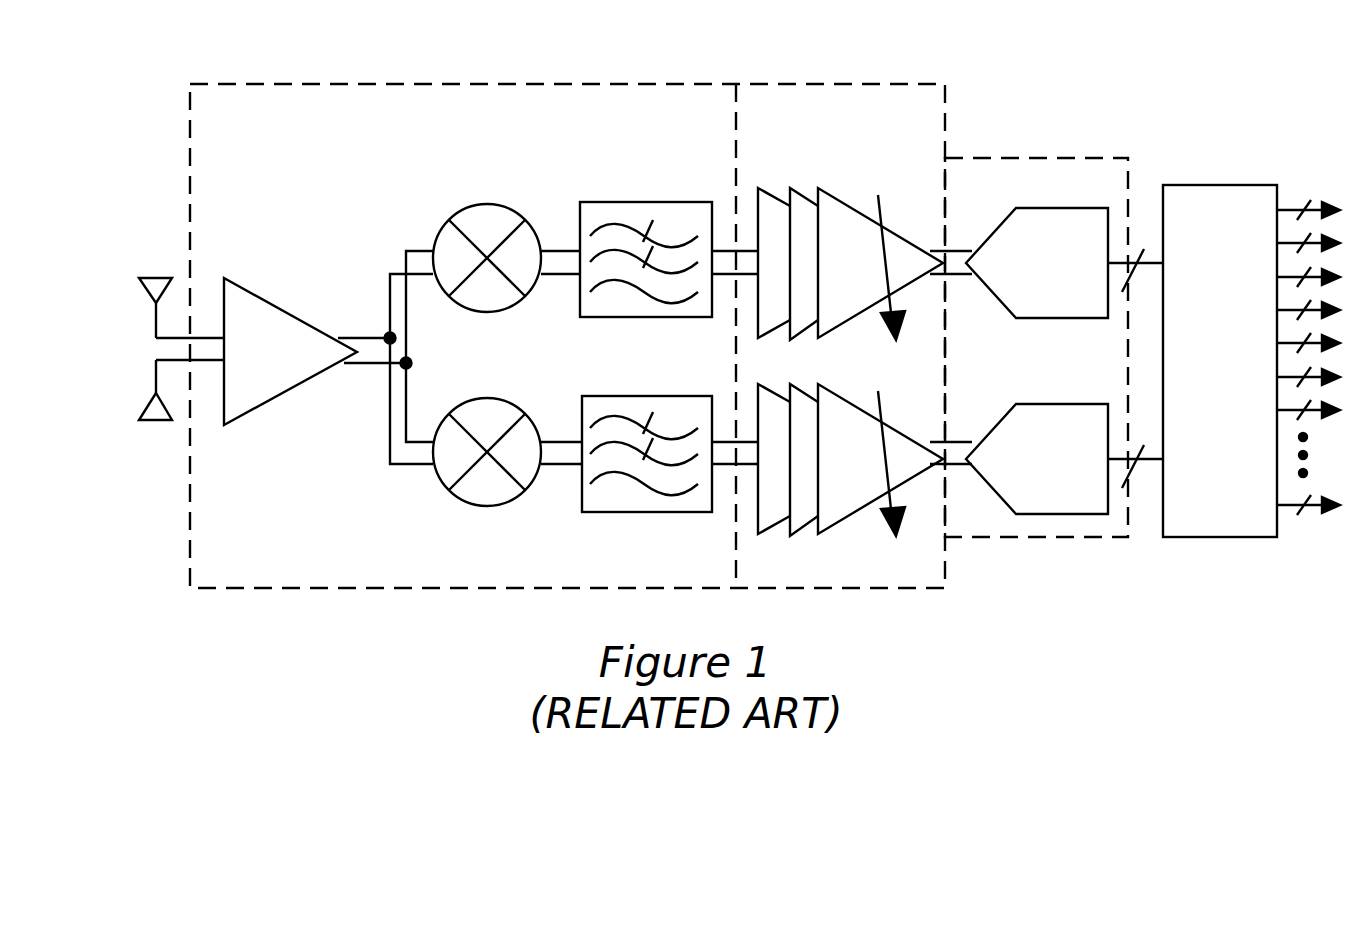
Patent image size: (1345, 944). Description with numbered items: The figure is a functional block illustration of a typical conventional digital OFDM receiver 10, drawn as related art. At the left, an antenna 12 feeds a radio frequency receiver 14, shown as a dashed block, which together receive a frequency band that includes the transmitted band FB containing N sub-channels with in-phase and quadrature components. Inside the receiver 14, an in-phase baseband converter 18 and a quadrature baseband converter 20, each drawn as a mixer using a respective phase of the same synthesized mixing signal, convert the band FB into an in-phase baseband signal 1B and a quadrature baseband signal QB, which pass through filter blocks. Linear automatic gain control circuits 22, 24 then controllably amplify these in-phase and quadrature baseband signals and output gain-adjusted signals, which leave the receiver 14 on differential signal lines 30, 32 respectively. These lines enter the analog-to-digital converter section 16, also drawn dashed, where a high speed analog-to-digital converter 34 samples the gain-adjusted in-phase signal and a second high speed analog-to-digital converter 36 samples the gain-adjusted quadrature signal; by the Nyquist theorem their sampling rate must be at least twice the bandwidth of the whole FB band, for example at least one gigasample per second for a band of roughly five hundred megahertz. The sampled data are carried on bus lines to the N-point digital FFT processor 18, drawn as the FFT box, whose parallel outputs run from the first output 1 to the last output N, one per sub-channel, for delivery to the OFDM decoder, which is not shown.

The digital OFDM receiver 10 is at (972, 64).
The antenna 12 is at (155, 422).
The radio frequency (RF) receiver 14 is at (222, 588).
The analog-to-digital converter (ADC) 16 is at (1065, 158).
The in-phase baseband converter 18 is at (485, 203).
The in-phase baseband signal 1B is at (656, 202).
The quadrature baseband signal QB is at (660, 512).
The quadrature baseband converter 20 is at (487, 506).
The linear automatic gain control circuit 22 is at (806, 196).
The linear automatic gain control circuit 24 is at (848, 400).
The differential signal line 30 is at (953, 250).
The differential signal line 32 is at (953, 475).
The high speed analog-to-digital converter 34 is at (1085, 208).
The high speed analog-to-digital converter 36 is at (1062, 511).
The first FFT output 1 is at (1308, 193).
The N sub-channels N is at (1308, 530).